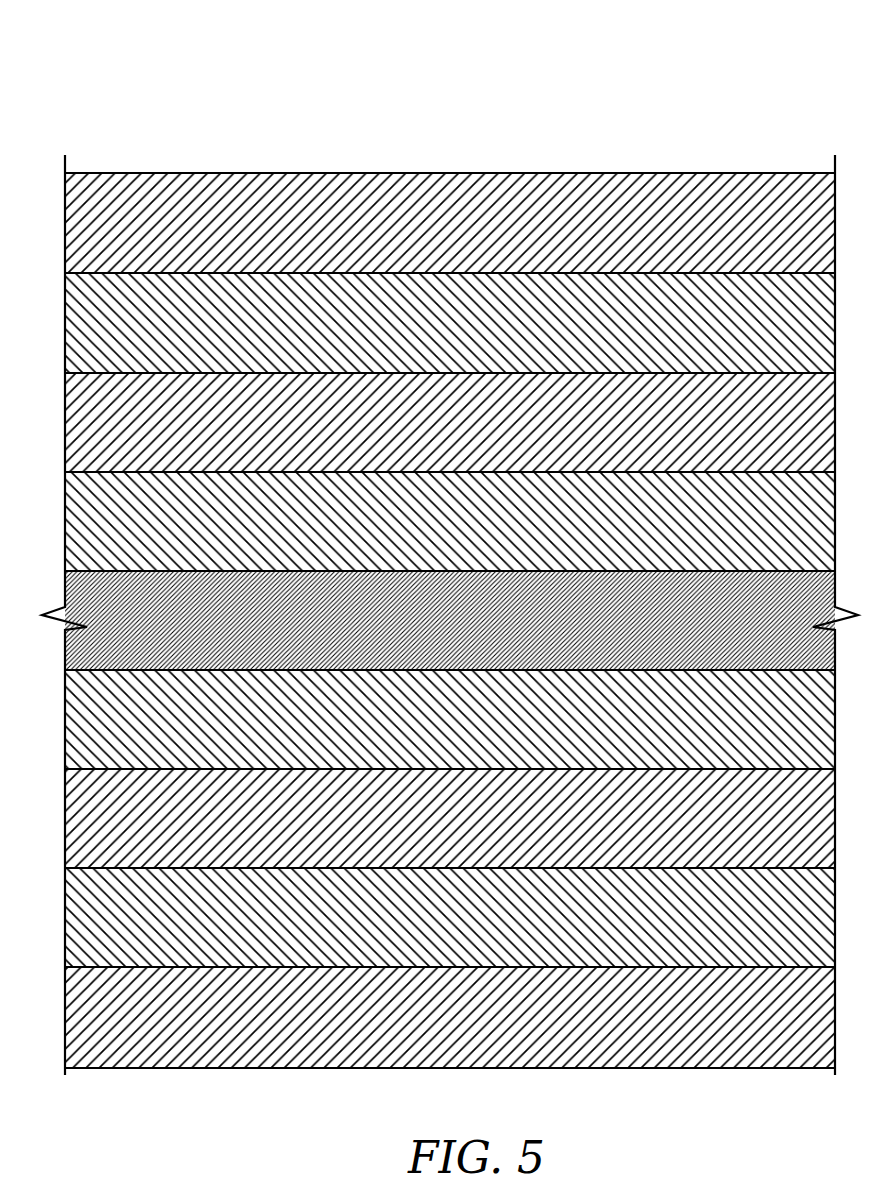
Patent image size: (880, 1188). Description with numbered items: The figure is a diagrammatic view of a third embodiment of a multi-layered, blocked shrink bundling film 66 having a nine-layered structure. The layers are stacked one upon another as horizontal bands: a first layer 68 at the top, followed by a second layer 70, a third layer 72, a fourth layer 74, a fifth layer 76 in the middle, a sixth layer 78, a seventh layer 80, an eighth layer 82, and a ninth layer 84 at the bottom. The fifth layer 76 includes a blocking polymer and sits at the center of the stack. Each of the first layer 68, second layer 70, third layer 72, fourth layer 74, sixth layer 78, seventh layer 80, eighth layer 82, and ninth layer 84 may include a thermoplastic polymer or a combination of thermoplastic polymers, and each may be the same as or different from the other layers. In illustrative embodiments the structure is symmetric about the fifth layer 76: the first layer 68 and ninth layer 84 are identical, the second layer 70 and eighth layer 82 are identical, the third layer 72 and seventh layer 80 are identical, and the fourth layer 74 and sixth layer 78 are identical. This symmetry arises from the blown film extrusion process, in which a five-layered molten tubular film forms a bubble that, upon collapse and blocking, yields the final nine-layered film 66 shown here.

The multi-layered blocked shrink bundling film 66 is at (117, 137).
The first layer 68 is at (117, 228).
The second layer 70 is at (117, 329).
The third layer 72 is at (117, 427).
The fourth layer 74 is at (117, 525).
The fifth layer 76 is at (117, 620).
The sixth layer 78 is at (117, 726).
The seventh layer 80 is at (117, 825).
The eighth layer 82 is at (117, 924).
The ninth layer 84 is at (117, 1023).